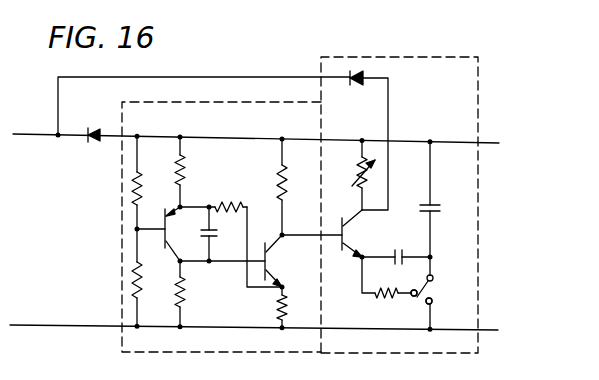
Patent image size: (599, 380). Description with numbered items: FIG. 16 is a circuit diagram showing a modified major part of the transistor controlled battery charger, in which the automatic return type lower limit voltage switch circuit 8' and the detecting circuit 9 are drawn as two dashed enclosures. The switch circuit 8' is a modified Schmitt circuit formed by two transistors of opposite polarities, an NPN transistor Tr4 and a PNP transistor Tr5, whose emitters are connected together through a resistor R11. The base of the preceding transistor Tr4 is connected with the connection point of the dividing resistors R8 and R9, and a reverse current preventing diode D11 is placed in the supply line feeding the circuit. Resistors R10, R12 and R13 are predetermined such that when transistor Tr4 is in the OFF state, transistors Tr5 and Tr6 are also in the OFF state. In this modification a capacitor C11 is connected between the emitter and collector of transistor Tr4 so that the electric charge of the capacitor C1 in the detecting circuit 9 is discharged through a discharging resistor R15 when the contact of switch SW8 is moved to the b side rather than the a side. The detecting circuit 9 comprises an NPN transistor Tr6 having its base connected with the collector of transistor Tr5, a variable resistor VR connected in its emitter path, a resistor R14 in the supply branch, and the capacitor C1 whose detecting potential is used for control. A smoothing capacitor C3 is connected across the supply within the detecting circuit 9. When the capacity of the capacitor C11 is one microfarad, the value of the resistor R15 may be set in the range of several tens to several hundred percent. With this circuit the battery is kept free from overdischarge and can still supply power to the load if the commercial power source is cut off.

The automatic return type lower limit voltage switch circuit 8' is at (221, 198).
The detecting circuit 9 is at (431, 56).
The reverse current preventing diode D11 is at (96, 125).
The dividing resistor R8 is at (133, 190).
The NPN transistor Tr4 is at (160, 226).
The dividing resistor R9 is at (150, 280).
The resistor R10 is at (199, 170).
The resistor R11 is at (236, 196).
The resistor R12 is at (199, 293).
The capacitor C11 is at (212, 240).
The resistor R14 is at (301, 182).
The PNP transistor Tr5 is at (290, 251).
The resistor R13 is at (301, 307).
The variable resistor VR is at (353, 172).
The NPN transistor Tr6 is at (340, 252).
The capacitor C1 is at (399, 245).
The smoothing capacitor C3 is at (439, 199).
The discharging resistor R15 is at (387, 300).
The switch SW8 is at (446, 274).
The contact a is at (437, 301).
The contact b is at (410, 303).